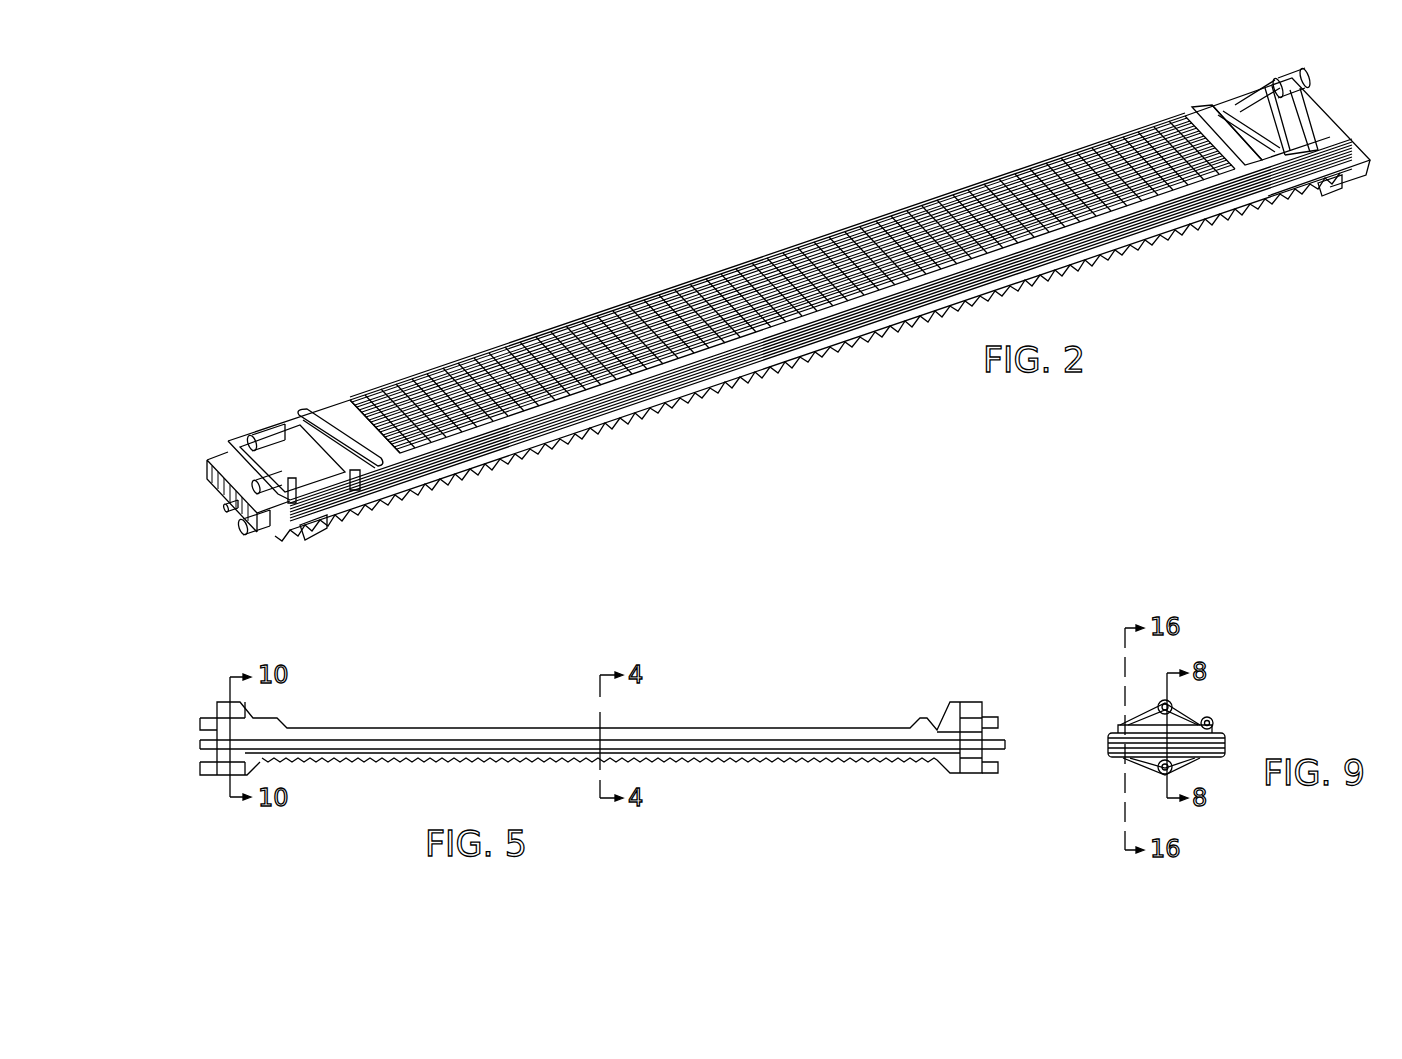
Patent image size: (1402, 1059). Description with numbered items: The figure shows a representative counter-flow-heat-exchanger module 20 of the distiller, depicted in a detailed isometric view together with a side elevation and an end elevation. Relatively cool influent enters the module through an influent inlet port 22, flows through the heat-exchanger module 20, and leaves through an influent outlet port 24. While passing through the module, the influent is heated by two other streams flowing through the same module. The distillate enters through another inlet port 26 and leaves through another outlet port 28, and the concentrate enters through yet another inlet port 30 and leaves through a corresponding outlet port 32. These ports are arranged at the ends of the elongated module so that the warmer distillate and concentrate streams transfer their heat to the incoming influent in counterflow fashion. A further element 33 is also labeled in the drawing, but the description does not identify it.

In FIG. 2, the counter-flow-heat-exchanger module 20 is at (786, 317).
In FIG. 5, the counter-flow-heat-exchanger module 20 is at (777, 681).
In FIG. 9, the counter-flow-heat-exchanger module 20 is at (1219, 683).
In FIG. 2, the influent inlet port 22 is at (266, 430).
In FIG. 2, the influent outlet port 24 is at (1302, 88).
In FIG. 2, the distillate inlet port 26 is at (1332, 188).
In FIG. 2, the distillate outlet port 28 is at (262, 533).
In FIG. 2, the concentrate inlet port 30 is at (1222, 100).
In FIG. 2, the concentrate outlet port 32 is at (337, 465).
In FIG. 2, the stub fitting 33 is at (223, 511).